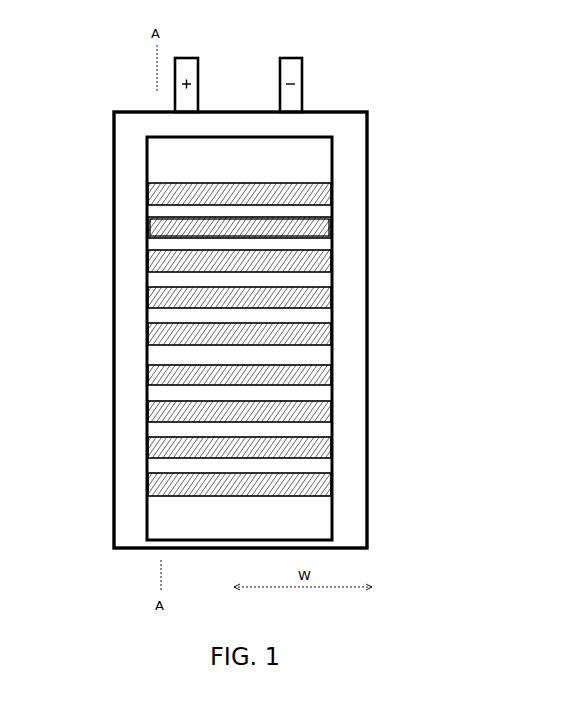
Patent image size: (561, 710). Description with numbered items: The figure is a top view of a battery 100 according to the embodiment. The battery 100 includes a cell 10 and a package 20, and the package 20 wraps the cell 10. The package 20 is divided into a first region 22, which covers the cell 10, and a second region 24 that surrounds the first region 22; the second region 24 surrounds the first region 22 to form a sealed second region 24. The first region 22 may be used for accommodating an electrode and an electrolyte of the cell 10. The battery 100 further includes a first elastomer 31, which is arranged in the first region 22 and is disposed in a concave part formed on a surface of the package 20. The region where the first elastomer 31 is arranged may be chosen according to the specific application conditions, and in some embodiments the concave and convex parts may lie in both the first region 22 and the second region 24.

The battery 100 is at (131, 75).
The package 20 is at (368, 118).
The cell 10 is at (331, 207).
The first elastomer 31 is at (332, 258).
The first region 22 is at (170, 240).
The second region 24 is at (122, 300).